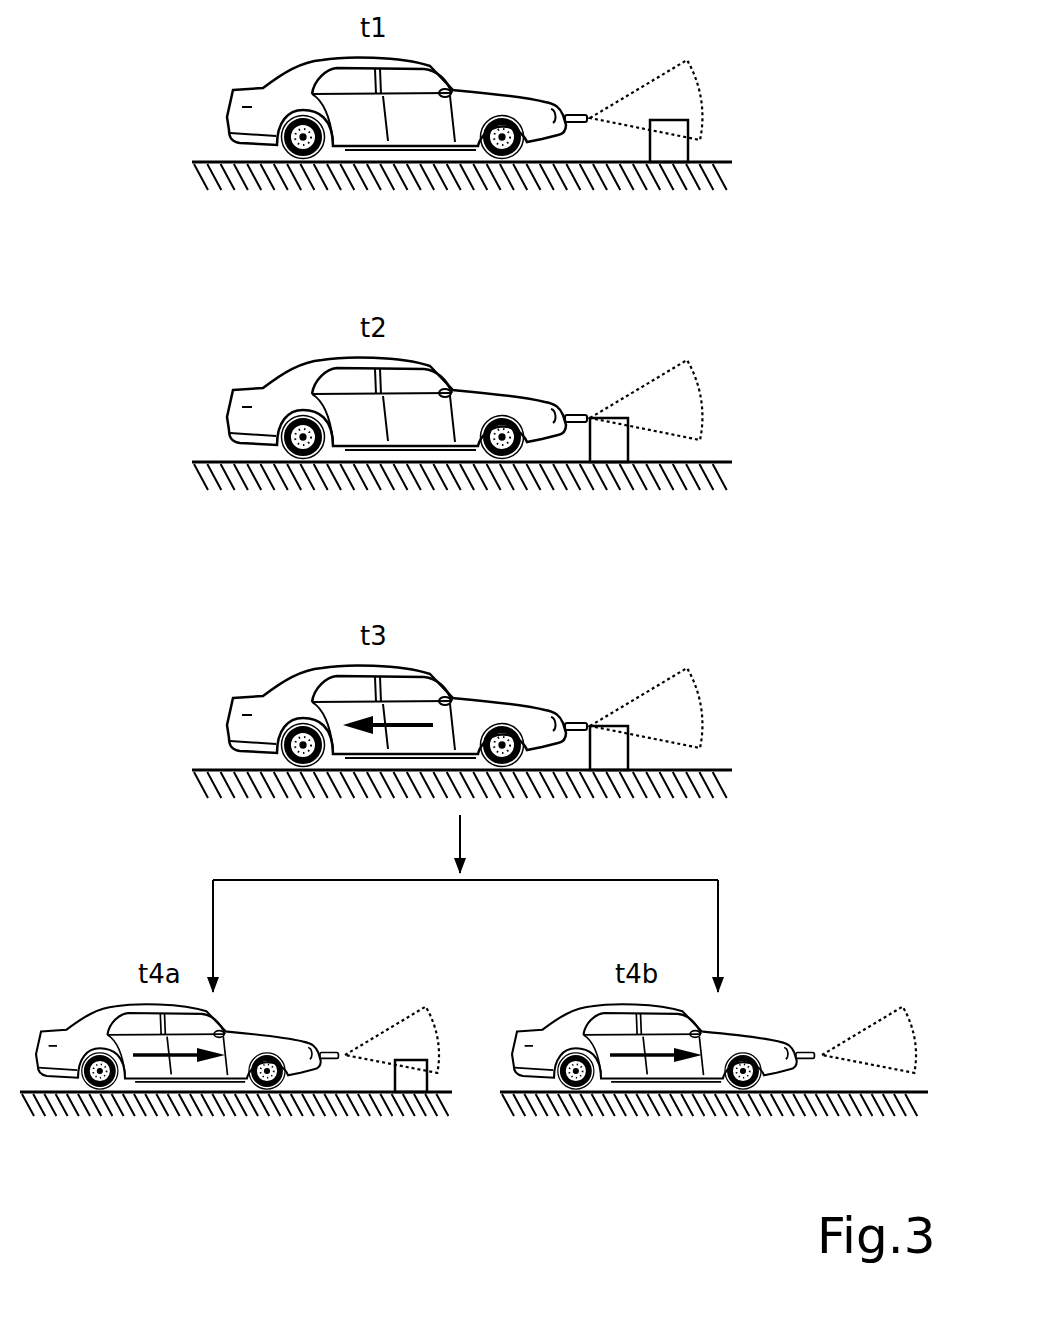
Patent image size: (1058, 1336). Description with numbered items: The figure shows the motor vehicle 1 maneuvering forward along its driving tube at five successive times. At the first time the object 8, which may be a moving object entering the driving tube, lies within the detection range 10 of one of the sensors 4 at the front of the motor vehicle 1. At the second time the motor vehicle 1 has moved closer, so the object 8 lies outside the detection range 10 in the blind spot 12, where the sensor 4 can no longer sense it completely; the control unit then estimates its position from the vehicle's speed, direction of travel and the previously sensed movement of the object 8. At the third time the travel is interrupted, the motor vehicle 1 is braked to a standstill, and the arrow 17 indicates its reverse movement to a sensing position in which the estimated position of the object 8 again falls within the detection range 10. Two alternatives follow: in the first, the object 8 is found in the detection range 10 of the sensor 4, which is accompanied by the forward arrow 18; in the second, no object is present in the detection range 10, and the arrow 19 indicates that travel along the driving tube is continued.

The motor vehicle 1 is at (88, 1010).
The sensor 4 is at (331, 1048).
The object 8 is at (688, 150).
The detection range 10 is at (705, 98).
The blind spot 12 is at (332, 1065).
The arrow 17 is at (388, 779).
The forward driving movement 18 is at (187, 1062).
The arrow 19 is at (662, 1062).